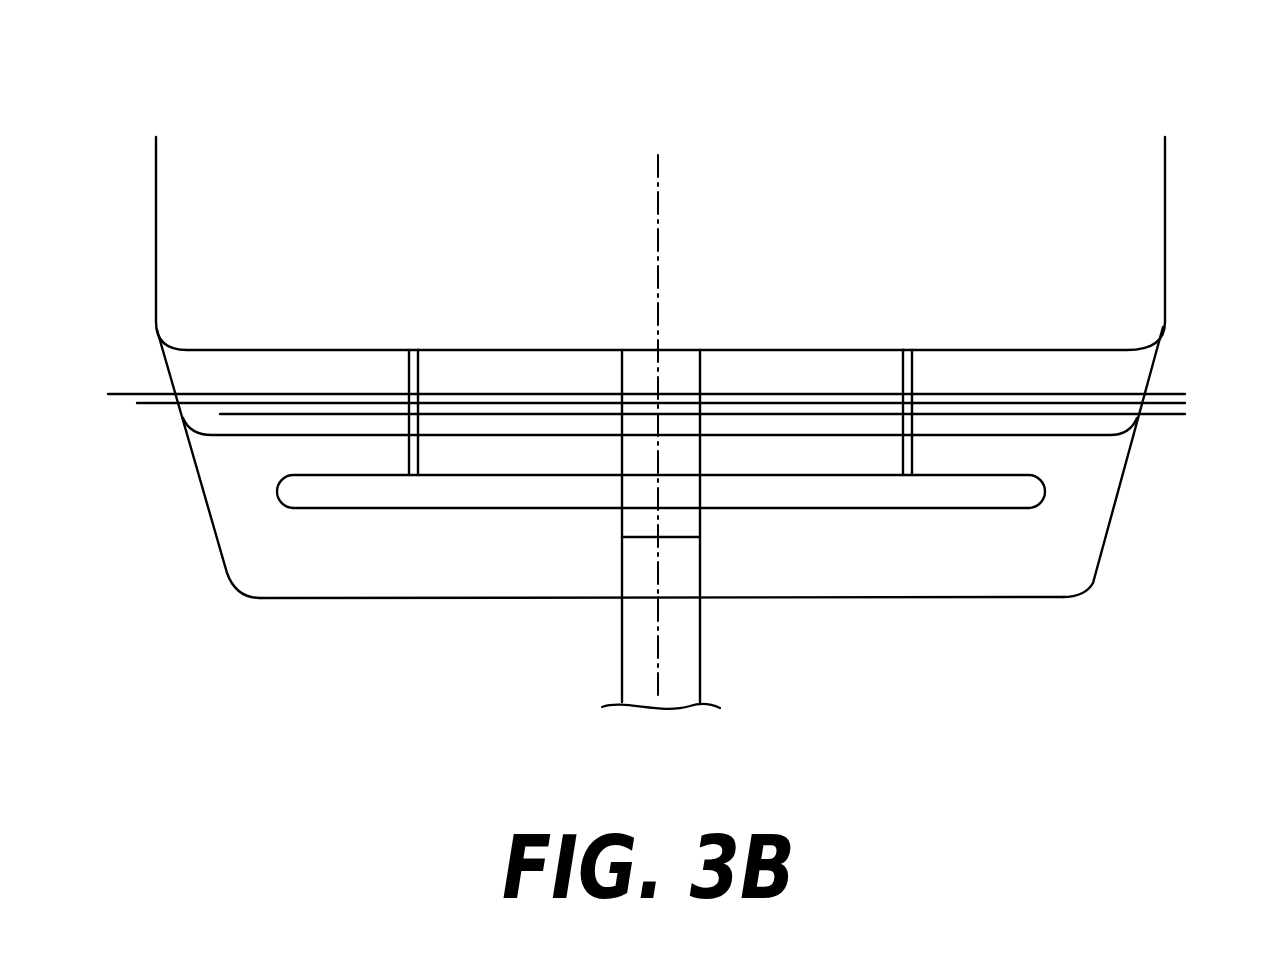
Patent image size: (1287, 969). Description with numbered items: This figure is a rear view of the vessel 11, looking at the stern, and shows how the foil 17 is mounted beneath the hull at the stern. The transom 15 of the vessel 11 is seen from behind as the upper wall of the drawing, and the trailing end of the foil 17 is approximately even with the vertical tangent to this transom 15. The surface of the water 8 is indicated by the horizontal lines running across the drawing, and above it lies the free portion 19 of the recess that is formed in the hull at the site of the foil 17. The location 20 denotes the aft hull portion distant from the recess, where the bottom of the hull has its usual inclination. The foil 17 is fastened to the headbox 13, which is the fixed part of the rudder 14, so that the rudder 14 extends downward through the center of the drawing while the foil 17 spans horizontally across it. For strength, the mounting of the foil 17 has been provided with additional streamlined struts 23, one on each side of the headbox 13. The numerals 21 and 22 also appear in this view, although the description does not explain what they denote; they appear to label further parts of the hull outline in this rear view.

The vessel 11 is at (797, 160).
The transom 15 is at (175, 208).
The free portion 19 is at (731, 348).
The flange 21 is at (1140, 363).
The surface of the water 8 is at (123, 394).
The location 20 is at (1078, 533).
The bottom wall 22 is at (408, 600).
The foil 17 is at (840, 493).
The streamlined struts 23 is at (408, 362).
The headbox 13 is at (640, 452).
The rudder 14 is at (633, 650).